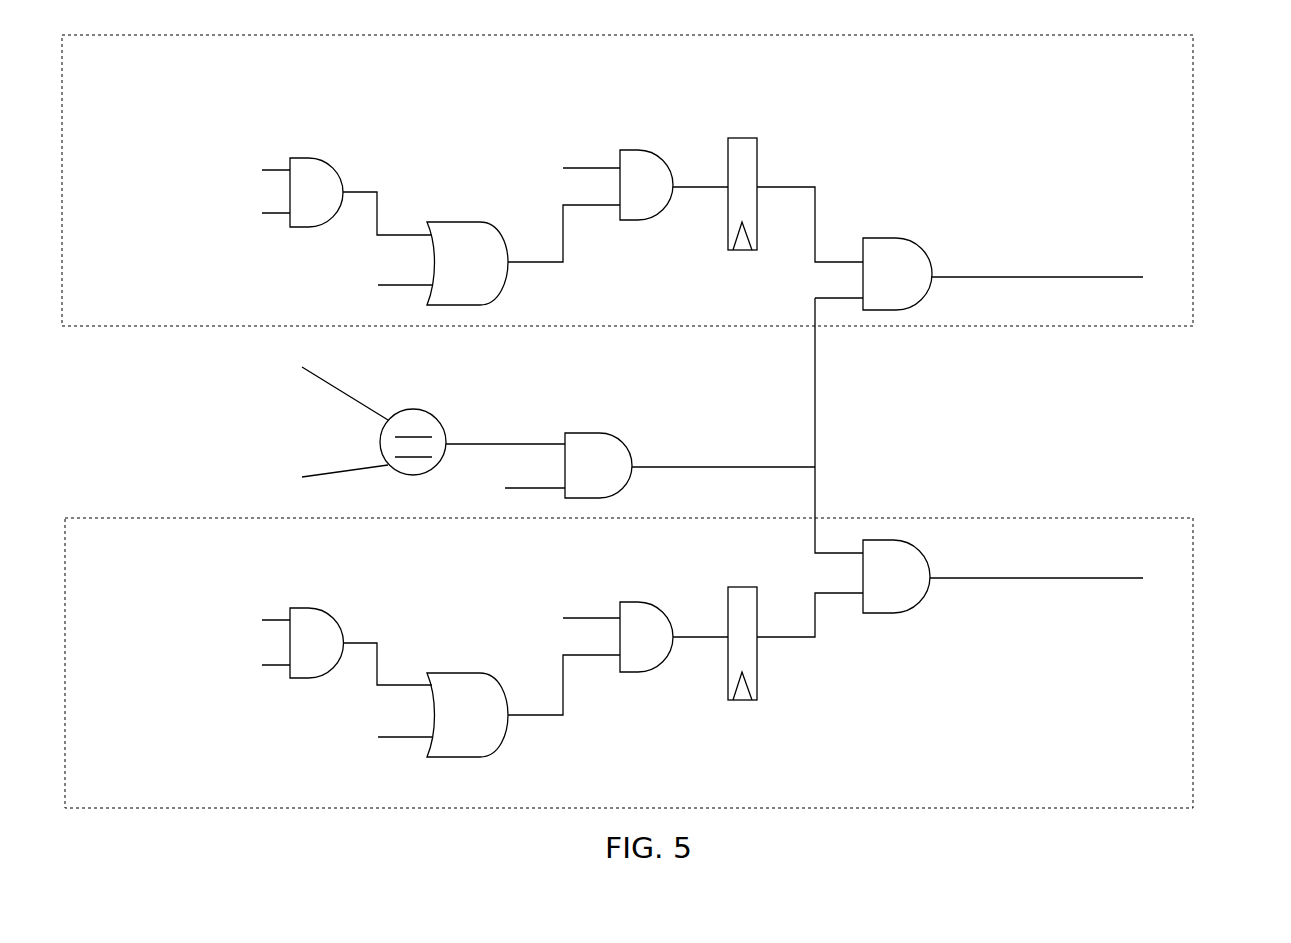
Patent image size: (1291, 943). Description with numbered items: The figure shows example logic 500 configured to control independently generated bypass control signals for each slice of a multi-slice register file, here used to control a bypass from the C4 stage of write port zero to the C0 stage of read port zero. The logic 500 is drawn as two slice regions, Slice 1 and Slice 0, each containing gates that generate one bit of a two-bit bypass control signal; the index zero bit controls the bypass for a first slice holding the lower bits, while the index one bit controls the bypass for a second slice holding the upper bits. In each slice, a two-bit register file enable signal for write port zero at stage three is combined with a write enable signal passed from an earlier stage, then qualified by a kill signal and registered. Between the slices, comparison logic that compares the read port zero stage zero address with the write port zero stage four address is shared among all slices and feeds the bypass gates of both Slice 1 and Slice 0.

The example logic 500 is at (1224, 113).
The Slice 1 is at (627, 294).
The Slice 0 is at (629, 663).